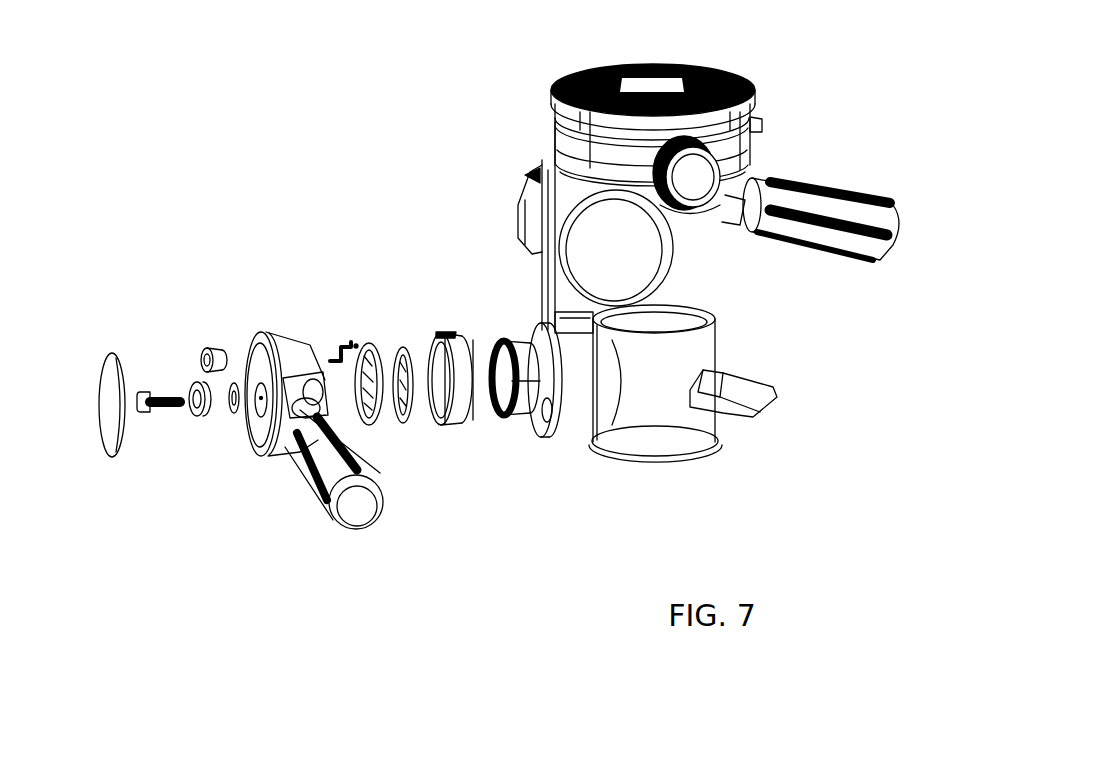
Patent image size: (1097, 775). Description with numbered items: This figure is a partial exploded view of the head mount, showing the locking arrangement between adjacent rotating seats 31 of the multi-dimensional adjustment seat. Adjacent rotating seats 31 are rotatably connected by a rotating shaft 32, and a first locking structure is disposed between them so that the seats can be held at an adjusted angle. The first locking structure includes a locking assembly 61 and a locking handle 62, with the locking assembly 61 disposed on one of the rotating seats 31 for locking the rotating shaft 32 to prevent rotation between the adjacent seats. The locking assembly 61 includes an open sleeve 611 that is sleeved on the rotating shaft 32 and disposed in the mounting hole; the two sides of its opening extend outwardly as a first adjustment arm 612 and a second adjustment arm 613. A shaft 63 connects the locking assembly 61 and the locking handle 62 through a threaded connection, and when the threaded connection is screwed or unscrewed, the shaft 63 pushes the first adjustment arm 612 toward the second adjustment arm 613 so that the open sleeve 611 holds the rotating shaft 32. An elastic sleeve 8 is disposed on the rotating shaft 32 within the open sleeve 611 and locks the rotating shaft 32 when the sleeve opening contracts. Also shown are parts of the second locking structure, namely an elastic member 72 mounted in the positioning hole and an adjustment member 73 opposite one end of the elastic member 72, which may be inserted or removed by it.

The elastic sleeve 8 is at (525, 403).
The rotating seat 31 is at (580, 403).
The rotating shaft 32 is at (490, 340).
The locking assembly 61 is at (241, 394).
The locking handle 62 is at (328, 465).
The shaft 63 is at (300, 410).
The elastic member 72 is at (345, 340).
The adjustment member 73 is at (387, 340).
The open sleeve 611 is at (410, 423).
The first adjustment arm 612 is at (448, 337).
The second adjustment arm 613 is at (447, 433).